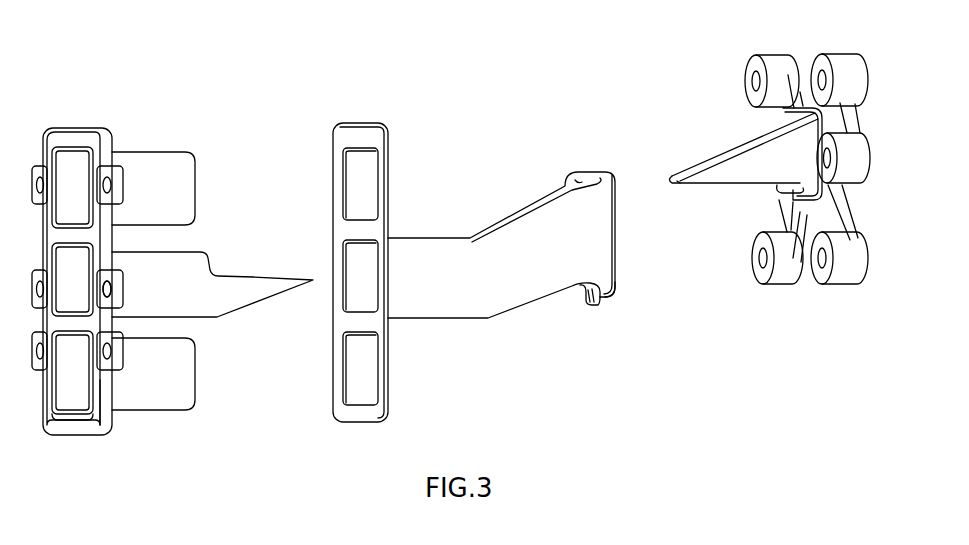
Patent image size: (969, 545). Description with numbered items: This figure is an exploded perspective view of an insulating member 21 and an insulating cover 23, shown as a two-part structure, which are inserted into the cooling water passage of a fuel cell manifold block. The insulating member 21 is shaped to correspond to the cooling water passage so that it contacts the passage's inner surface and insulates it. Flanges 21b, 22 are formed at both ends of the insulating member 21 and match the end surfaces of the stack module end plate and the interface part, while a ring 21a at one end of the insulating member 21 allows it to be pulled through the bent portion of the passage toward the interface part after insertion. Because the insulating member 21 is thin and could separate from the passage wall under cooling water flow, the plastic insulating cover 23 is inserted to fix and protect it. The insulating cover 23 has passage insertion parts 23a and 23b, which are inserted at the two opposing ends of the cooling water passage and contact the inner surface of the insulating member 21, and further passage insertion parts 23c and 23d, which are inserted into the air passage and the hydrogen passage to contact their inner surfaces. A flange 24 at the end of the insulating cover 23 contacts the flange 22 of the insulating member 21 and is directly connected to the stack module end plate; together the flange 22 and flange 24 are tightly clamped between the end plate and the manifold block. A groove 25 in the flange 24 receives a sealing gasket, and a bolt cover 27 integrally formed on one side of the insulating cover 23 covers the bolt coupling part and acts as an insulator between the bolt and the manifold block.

The insulating member 21 is at (537, 268).
The ring 21a is at (587, 312).
The flange 21b is at (612, 300).
The flange 22 is at (390, 158).
The insulating cover 23 is at (145, 148).
The passage insertion part 23a is at (252, 289).
The passage insertion part 23b is at (737, 170).
The passage insertion part 23c is at (173, 195).
The passage insertion part 23d is at (182, 397).
The flange 24 is at (108, 385).
The groove 25 is at (80, 424).
The bolt cover 27 is at (120, 287).